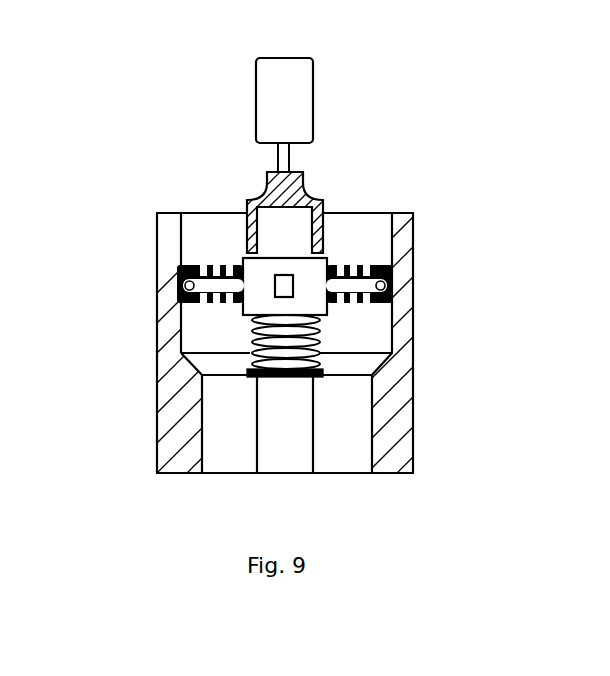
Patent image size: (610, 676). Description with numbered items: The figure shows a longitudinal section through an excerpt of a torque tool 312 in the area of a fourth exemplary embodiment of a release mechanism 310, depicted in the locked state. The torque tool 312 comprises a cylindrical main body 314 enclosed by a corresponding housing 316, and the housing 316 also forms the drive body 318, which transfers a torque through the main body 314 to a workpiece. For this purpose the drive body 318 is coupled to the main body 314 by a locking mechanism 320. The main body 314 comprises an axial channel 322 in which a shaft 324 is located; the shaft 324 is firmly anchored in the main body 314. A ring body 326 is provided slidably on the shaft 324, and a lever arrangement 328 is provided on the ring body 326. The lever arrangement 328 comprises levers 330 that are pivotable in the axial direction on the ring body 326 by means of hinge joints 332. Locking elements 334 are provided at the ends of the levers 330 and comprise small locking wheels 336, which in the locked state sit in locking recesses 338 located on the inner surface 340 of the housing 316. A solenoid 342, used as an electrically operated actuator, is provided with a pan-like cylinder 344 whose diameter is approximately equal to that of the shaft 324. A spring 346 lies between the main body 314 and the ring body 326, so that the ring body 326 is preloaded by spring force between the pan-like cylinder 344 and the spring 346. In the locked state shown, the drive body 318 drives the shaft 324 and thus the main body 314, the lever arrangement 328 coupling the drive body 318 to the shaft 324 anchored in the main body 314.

The release mechanism 310 is at (437, 208).
The torque tool 312 is at (137, 267).
The main body 314 is at (360, 347).
The housing 316 is at (175, 450).
The drive body 318 is at (405, 453).
The locking mechanism 320 is at (341, 245).
The axial channel 322 is at (317, 422).
The shaft 324 is at (268, 447).
The ring body 326 is at (255, 302).
The lever arrangement 328 is at (213, 250).
The levers 330 is at (352, 262).
The hinge joints 332 is at (232, 265).
The locking elements 334 is at (182, 283).
The locking wheels 336 is at (390, 289).
The locking recesses 338 is at (392, 262).
The inner surface 340 is at (205, 257).
The solenoid 342 is at (294, 73).
The pan-like cylinder 344 is at (309, 187).
The spring 346 is at (288, 368).